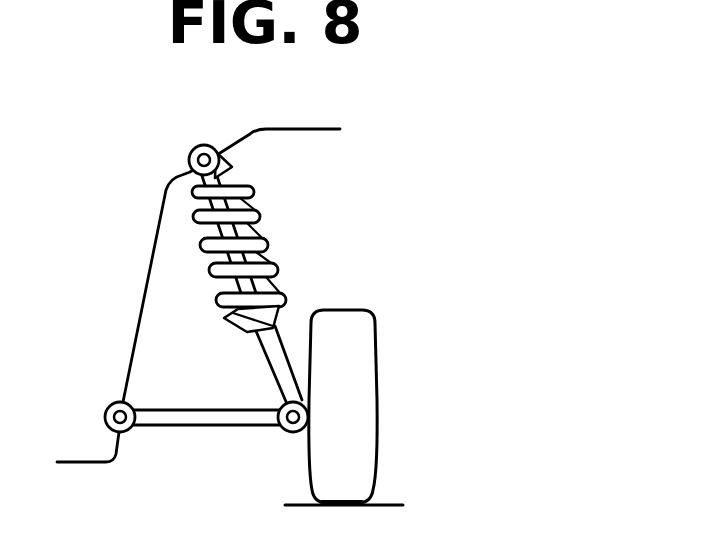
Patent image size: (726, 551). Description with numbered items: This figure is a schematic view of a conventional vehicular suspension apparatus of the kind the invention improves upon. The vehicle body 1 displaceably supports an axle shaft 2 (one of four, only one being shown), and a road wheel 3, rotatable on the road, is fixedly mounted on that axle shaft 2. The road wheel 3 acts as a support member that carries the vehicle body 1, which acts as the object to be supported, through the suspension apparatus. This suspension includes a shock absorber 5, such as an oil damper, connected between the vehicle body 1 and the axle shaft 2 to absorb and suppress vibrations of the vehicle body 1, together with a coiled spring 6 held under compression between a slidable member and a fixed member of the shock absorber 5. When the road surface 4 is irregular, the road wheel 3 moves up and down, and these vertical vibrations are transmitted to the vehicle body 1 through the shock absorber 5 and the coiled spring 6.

The vehicle body 1 is at (140, 334).
The axle shaft 2 is at (193, 427).
The road wheel 3 is at (337, 310).
The road surface 4 is at (380, 501).
The shock absorber 5 is at (247, 237).
The coiled spring 6 is at (252, 188).